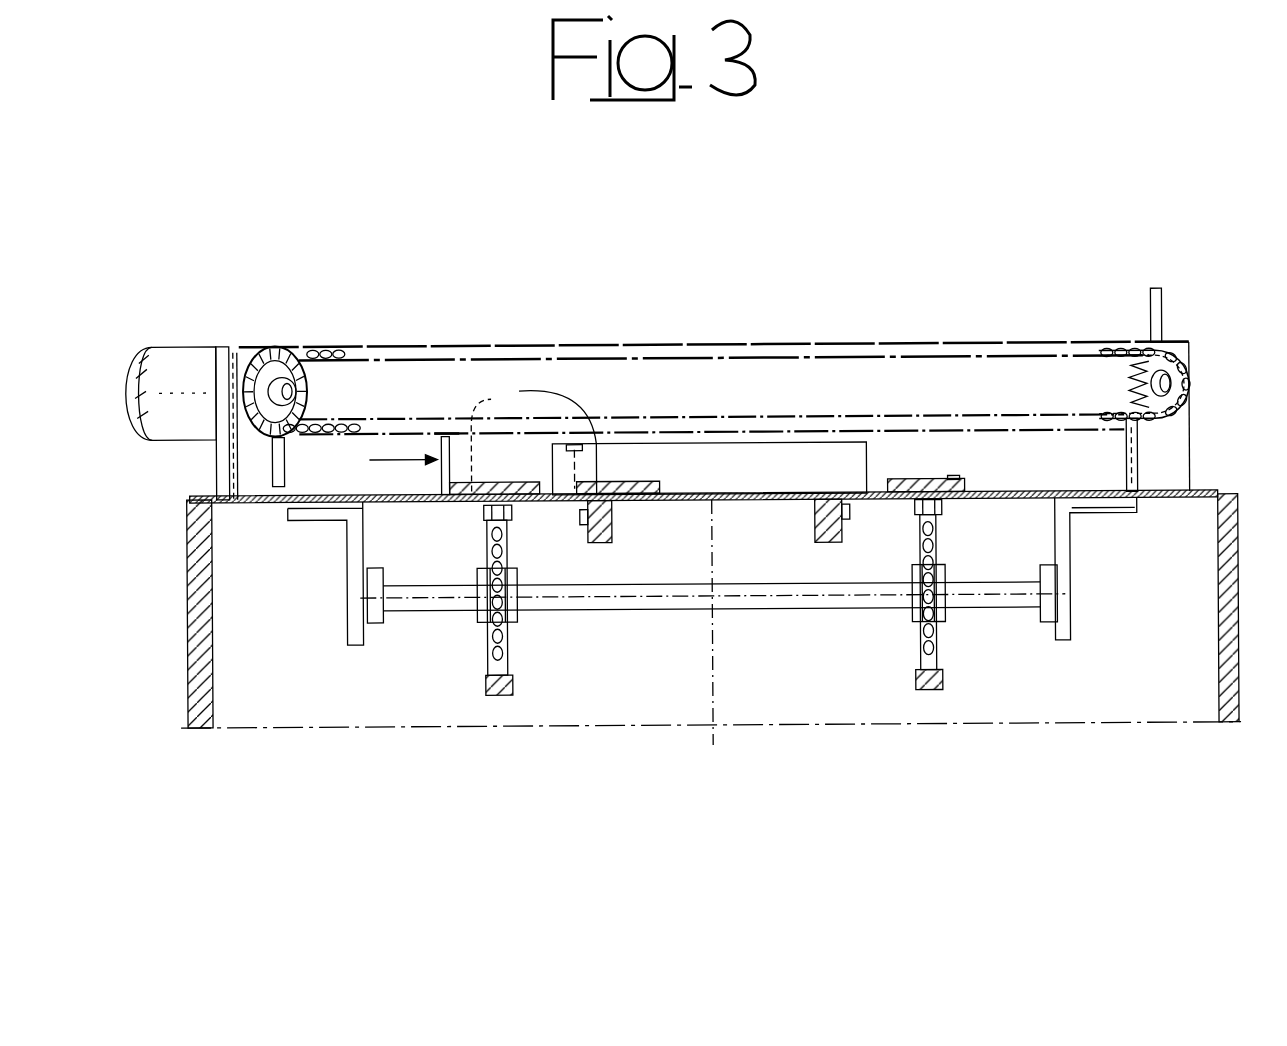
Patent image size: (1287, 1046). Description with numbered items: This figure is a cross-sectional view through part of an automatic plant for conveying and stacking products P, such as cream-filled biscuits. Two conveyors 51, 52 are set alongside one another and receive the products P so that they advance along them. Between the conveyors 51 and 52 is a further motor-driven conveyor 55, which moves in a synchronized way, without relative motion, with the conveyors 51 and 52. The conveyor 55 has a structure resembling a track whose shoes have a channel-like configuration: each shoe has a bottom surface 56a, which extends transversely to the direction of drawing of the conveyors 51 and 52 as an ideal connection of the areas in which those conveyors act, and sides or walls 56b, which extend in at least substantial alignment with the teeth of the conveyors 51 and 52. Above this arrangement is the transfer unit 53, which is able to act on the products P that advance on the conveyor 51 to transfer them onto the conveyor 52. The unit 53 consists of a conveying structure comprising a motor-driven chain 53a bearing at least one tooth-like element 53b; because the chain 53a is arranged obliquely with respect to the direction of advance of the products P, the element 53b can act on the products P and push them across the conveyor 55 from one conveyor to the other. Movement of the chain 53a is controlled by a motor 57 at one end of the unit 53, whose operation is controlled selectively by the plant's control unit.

The conveyor 51 is at (958, 545).
The conveyor 52 is at (460, 540).
The transfer unit 53 is at (338, 340).
The motor-driven chain 53a is at (975, 346).
The tooth-like element 53b is at (1165, 300).
The motor-driven conveyor 55 is at (688, 506).
The bottom surface 56a is at (768, 486).
The sides or walls 56b is at (724, 446).
The motor 57 is at (190, 352).
The products P is at (1010, 458).